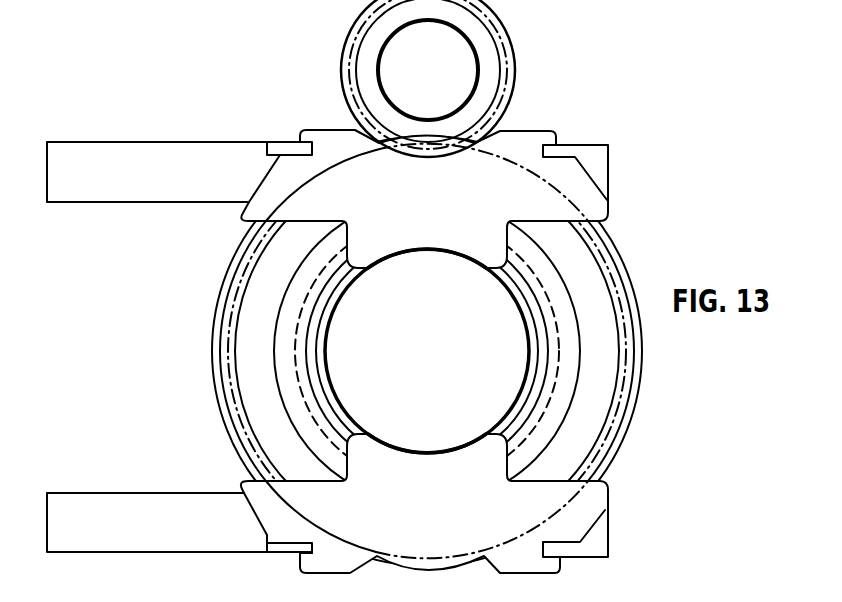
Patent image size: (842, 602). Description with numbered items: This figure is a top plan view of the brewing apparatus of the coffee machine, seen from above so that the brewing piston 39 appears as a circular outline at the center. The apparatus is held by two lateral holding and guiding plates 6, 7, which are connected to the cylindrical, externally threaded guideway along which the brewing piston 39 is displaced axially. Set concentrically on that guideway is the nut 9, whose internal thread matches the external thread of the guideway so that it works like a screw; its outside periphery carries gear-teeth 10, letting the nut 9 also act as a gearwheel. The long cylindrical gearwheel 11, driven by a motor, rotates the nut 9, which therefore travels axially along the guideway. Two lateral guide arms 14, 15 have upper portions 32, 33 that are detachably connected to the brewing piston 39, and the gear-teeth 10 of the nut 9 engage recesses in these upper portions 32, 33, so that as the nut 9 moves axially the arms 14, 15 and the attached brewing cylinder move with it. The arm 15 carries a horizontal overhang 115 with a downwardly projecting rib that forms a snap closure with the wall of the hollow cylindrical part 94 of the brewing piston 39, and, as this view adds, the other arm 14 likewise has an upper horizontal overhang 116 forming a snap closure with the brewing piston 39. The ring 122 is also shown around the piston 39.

The lateral holding and guiding plate 6 is at (141, 511).
The lateral holding and guiding plate 7 is at (143, 153).
The nut 9 is at (256, 306).
The gear-teeth 10 is at (215, 344).
The cylindrical gearwheel 11 is at (352, 67).
The guide arm 14 is at (618, 181).
The guide arm 15 is at (618, 527).
The upper portion of guide arm 32 is at (438, 227).
The upper portion of guide arm 33 is at (444, 507).
The brewing piston 39 is at (316, 340).
The hollow cylindrical part of brewing piston 94 is at (340, 403).
The horizontal overhang 115 is at (421, 463).
The upper horizontal overhang 116 is at (432, 242).
The seal ring 122 is at (306, 301).